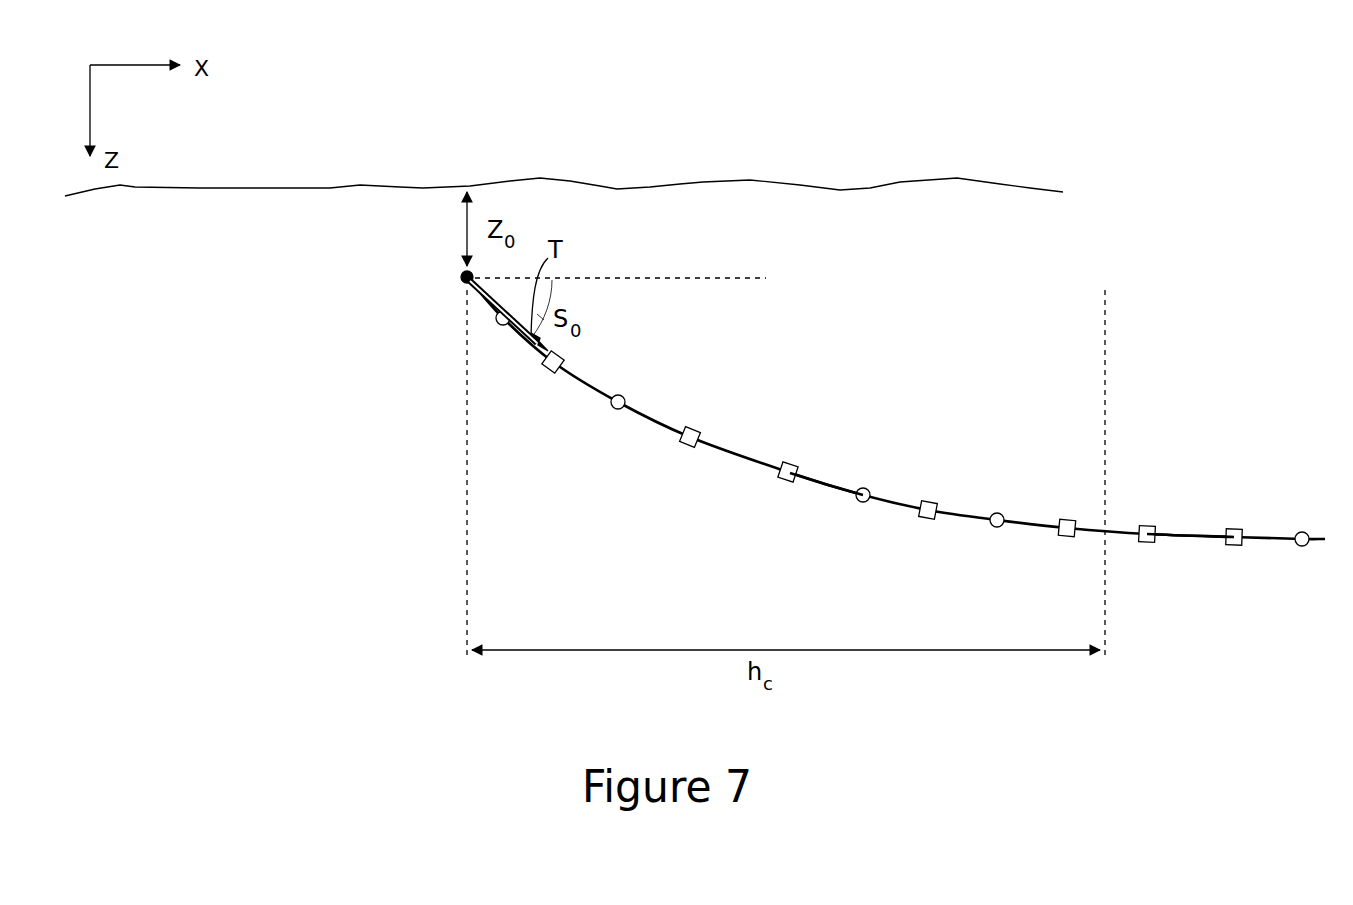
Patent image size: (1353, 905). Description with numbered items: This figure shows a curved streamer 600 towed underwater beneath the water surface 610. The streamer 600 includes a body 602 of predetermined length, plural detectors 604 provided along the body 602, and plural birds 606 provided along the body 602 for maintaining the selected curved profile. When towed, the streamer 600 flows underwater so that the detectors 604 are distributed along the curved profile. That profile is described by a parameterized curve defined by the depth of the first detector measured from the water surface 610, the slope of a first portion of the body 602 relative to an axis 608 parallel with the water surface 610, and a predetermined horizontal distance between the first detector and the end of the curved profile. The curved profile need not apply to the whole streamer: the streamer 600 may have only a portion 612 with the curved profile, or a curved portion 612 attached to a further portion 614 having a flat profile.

The curved streamer 600 is at (588, 506).
The body 602 is at (722, 447).
The detectors 604 is at (626, 398).
The birds 606 is at (546, 372).
The axis 608 is at (693, 278).
The water surface 610 is at (703, 182).
The curved portion 612 is at (827, 485).
The flat portion 614 is at (1190, 535).